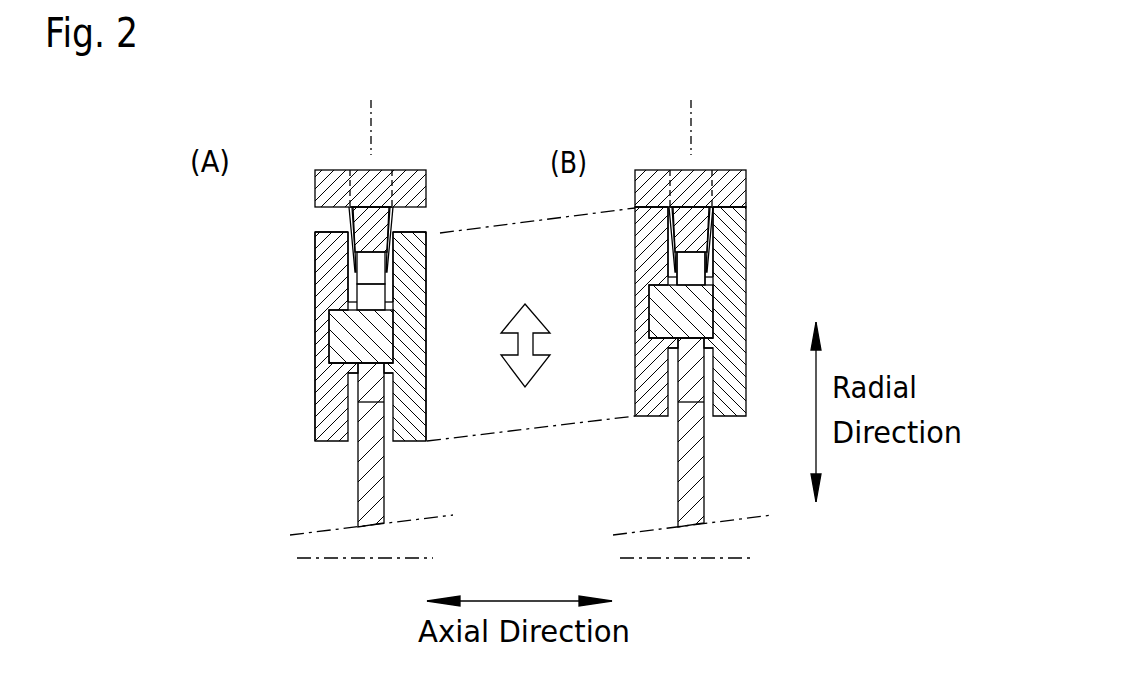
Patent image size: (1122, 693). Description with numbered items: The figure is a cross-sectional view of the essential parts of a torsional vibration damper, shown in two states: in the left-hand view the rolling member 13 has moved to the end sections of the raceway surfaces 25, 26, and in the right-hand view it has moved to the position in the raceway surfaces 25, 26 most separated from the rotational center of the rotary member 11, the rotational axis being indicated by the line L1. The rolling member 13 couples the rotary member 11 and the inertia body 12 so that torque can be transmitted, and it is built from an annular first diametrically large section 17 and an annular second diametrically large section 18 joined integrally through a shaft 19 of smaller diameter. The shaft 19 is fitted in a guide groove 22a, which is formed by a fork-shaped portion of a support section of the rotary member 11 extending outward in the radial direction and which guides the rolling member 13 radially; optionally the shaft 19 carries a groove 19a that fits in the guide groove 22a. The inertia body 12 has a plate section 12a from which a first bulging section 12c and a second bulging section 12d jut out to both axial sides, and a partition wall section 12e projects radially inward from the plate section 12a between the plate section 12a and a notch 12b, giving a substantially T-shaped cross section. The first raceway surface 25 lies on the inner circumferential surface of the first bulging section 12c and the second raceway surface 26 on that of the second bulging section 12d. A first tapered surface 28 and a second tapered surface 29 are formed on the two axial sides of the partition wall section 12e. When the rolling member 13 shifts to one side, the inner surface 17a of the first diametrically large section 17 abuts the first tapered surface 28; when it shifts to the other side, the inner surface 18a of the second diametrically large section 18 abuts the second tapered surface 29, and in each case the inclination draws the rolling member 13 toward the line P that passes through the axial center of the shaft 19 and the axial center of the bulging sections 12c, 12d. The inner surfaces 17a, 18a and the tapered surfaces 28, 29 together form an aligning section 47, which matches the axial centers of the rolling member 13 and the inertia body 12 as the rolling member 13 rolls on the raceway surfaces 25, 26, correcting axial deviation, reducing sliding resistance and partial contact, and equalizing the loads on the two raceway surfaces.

The rotary member 11 is at (357, 488).
The inertia body 12 is at (403, 170).
The plate section 12a is at (375, 182).
The notch 12b is at (372, 267).
The first bulging section 12c is at (332, 180).
The second bulging section 12d is at (410, 187).
The partition wall section 12e is at (372, 223).
The rolling member 13 is at (317, 287).
The first diametrically large section 17 is at (330, 418).
The inner surface of the first diametrically large section 17a is at (317, 303).
The second diametrically large section 18 is at (413, 422).
The inner surface of the second diametrically large section 18a is at (368, 300).
The shaft 19 is at (360, 340).
The groove 19a is at (387, 370).
The guide groove 22a is at (385, 307).
The first raceway surface 25 is at (332, 217).
The second raceway surface 26 is at (408, 217).
The first tapered surface 28 is at (332, 243).
The second tapered surface 29 is at (410, 233).
The aligning section 47 is at (347, 255).
The rotational axis L1 is at (395, 557).
The line P is at (371, 103).